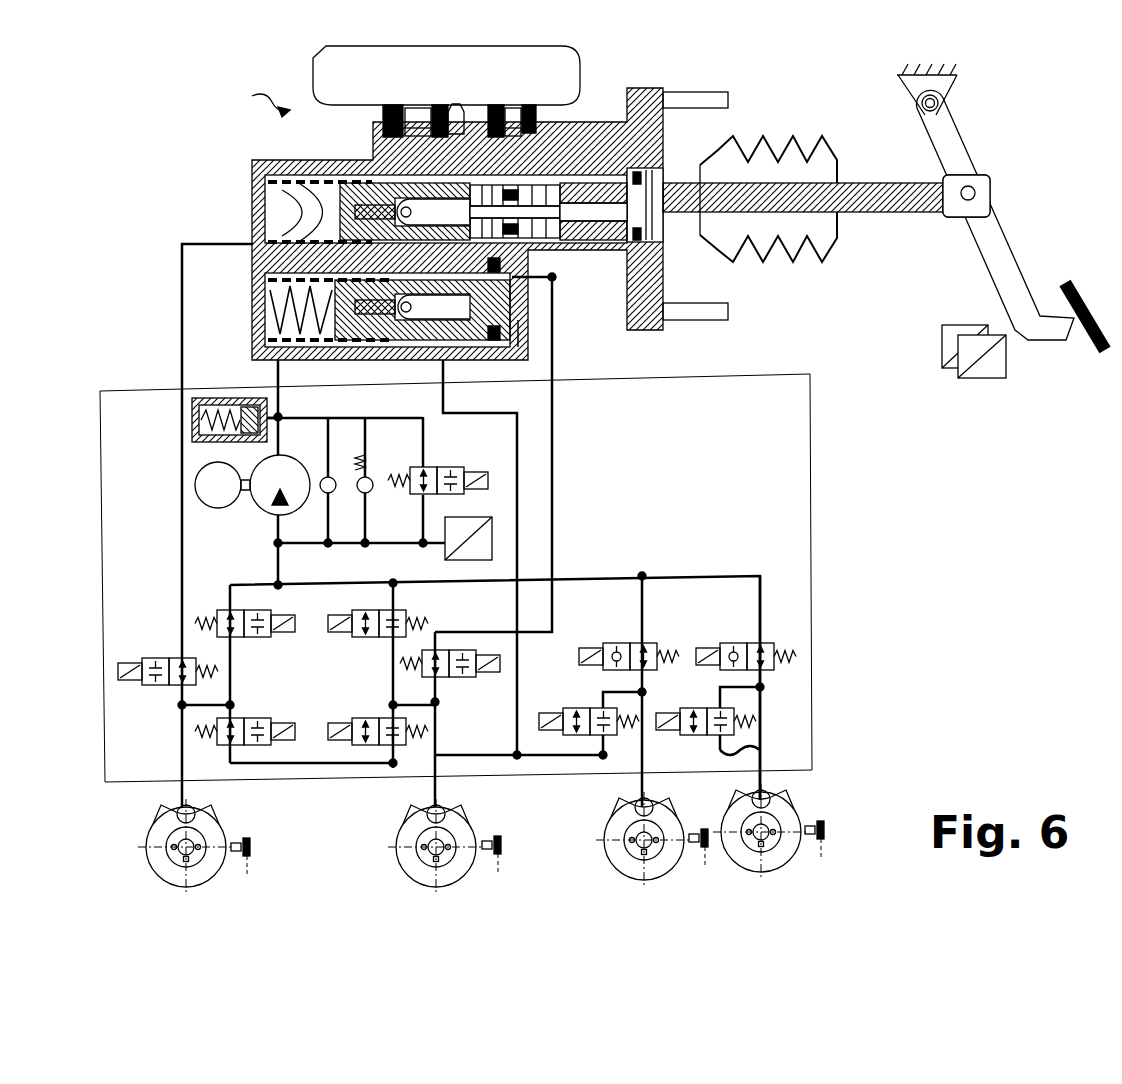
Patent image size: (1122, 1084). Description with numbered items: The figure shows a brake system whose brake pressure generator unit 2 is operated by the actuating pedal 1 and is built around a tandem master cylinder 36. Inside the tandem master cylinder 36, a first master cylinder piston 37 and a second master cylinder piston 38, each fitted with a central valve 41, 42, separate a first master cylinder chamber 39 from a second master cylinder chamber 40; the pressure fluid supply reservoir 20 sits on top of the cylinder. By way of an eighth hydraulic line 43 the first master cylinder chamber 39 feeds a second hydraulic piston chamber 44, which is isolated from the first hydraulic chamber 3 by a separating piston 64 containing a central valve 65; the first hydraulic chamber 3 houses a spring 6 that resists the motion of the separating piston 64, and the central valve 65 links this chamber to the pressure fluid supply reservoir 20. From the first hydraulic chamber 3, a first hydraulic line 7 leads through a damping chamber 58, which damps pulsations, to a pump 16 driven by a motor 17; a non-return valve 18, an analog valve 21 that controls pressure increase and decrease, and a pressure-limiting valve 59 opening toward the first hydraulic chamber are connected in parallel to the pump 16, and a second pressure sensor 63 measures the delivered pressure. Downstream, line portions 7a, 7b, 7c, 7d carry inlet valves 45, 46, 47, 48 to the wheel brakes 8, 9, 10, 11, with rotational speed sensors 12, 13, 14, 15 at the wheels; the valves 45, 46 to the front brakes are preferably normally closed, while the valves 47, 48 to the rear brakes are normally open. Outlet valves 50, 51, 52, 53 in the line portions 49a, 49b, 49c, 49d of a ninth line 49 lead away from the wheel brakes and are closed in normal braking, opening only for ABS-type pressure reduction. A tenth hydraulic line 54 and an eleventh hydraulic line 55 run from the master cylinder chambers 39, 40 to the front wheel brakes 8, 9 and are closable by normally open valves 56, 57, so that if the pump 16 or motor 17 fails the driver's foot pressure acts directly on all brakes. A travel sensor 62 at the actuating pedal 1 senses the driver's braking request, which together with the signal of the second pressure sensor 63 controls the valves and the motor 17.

The actuating pedal 1 is at (1012, 246).
The brake pressure generator unit 2 is at (255, 99).
The first hydraulic chamber 3 is at (268, 294).
The spring 6 is at (270, 326).
The first hydraulic line 7 is at (276, 386).
The line portion 7a is at (244, 582).
The line portion 7b is at (397, 586).
The line portion 7c is at (634, 586).
The line portion 7d is at (760, 584).
The wheel brake 8 is at (154, 870).
The wheel brake 9 is at (410, 872).
The wheel brake 10 is at (620, 870).
The wheel brake 11 is at (788, 868).
The rotational speed sensor 12 is at (252, 844).
The rotational speed sensor 13 is at (502, 842).
The rotational speed sensor 14 is at (704, 830).
The rotational speed sensor 15 is at (823, 824).
The pump 16 is at (294, 470).
The motor 17 is at (195, 486).
The non-return valve 18 is at (334, 470).
The pressure fluid supply reservoir 20 is at (318, 61).
The valve 21 is at (443, 466).
The tandem master cylinder 36 is at (252, 164).
The first master cylinder piston 37 is at (704, 148).
The second master cylinder piston 38 is at (380, 178).
The first master cylinder chamber 39 is at (556, 190).
The second master cylinder chamber 40 is at (294, 194).
The central valve 41 is at (586, 200).
The central valve 42 is at (310, 215).
The eighth hydraulic line 43 is at (552, 277).
The second hydraulic piston chamber 44 is at (510, 328).
The inlet valve 45 is at (252, 636).
The inlet valve 46 is at (381, 636).
The inlet valve 47 is at (628, 644).
The inlet valve 48 is at (744, 644).
The ninth line 49 is at (519, 506).
The line portion 49a is at (226, 754).
The line portion 49b is at (392, 762).
The line portion 49c is at (590, 756).
The line portion 49d is at (750, 748).
The outlet valve 50 is at (236, 722).
The outlet valve 51 is at (382, 726).
The outlet valve 52 is at (580, 708).
The outlet valve 53 is at (710, 708).
The tenth hydraulic line 54 is at (182, 300).
The eleventh hydraulic line 55 is at (552, 446).
The valve 56 is at (157, 684).
The valve 57 is at (450, 685).
The damping chamber 58 is at (192, 418).
The pressure-limiting valve 59 is at (370, 472).
The travel sensor 62 is at (985, 380).
The second pressure sensor 63 is at (466, 518).
The separating piston 64 is at (460, 350).
The central valve 65 is at (320, 360).